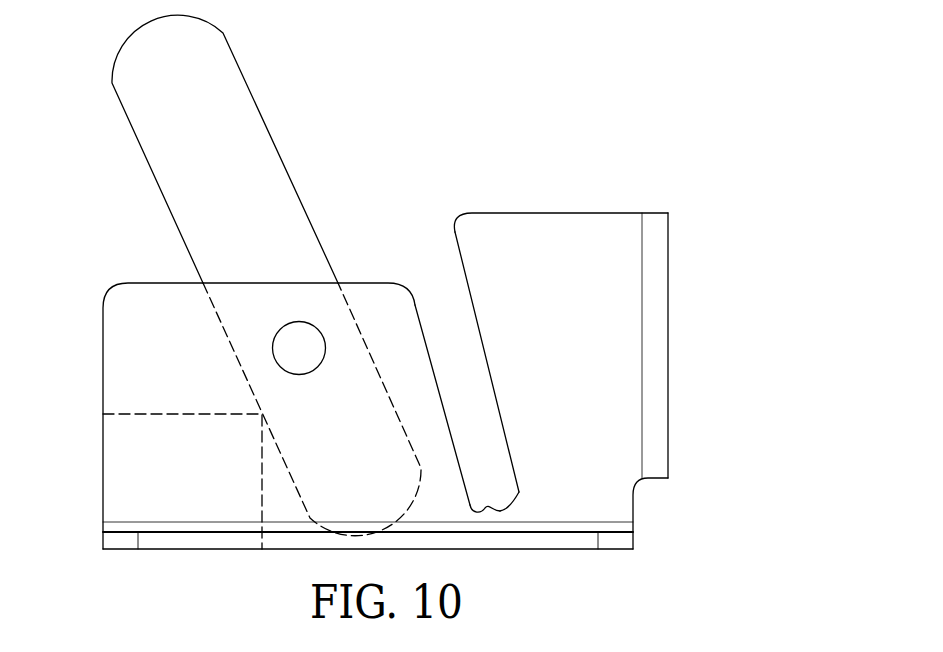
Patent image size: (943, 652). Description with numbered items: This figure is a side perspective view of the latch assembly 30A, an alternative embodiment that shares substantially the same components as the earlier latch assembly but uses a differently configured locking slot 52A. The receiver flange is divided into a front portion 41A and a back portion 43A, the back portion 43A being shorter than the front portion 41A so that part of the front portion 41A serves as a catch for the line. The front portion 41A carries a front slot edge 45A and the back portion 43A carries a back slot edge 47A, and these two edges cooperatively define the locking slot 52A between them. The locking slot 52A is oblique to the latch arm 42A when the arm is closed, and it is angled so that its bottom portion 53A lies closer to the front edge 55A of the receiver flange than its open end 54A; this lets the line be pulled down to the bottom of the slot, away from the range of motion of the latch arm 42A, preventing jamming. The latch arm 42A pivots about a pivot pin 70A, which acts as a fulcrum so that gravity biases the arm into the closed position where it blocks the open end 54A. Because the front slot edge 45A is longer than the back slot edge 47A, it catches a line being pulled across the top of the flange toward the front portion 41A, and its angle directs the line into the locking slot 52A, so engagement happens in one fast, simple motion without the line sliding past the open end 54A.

The latch assembly 30A is at (386, 331).
The front portion 41A is at (615, 237).
The latch arm 42A is at (228, 102).
The back portion 43A is at (128, 365).
The front slot edge 45A is at (486, 363).
The back slot edge 47A is at (427, 350).
The locking slot 52A is at (530, 510).
The bottom portion 53A is at (476, 512).
The open end 54A is at (432, 274).
The front edge 55A is at (668, 360).
The pivot pin 70A is at (287, 352).